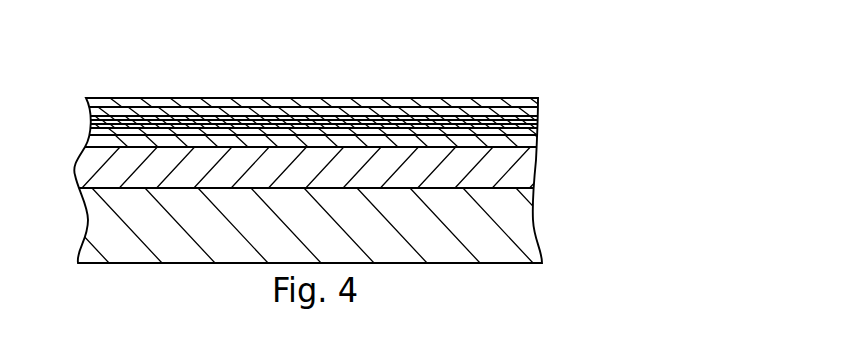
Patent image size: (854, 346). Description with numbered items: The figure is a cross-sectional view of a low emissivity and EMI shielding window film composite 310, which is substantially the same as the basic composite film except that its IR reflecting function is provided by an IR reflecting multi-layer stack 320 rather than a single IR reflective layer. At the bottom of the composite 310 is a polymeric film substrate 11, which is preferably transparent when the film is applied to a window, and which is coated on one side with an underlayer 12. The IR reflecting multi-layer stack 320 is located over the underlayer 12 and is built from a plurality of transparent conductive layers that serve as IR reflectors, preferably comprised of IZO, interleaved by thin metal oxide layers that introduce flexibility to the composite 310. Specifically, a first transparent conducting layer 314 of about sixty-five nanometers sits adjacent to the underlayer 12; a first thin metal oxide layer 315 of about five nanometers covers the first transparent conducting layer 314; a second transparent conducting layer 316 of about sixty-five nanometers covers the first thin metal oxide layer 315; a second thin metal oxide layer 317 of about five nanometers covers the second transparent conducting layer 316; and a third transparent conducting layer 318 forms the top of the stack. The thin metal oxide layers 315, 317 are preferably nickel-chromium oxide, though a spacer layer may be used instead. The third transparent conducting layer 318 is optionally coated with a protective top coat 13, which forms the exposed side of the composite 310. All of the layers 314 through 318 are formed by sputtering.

The composite 310 is at (657, 78).
The IR reflecting multi-layer stack 320 is at (70, 112).
The protective top coat 13 is at (478, 105).
The third transparent conducting layer 318 is at (538, 112).
The second thin metal oxide layer 317 is at (538, 119).
The second transparent conducting layer 316 is at (538, 124).
The first thin metal oxide layer 315 is at (538, 132).
The first transparent conducting layer 314 is at (545, 167).
The underlayer 12 is at (538, 193).
The polymeric film substrate 11 is at (528, 248).